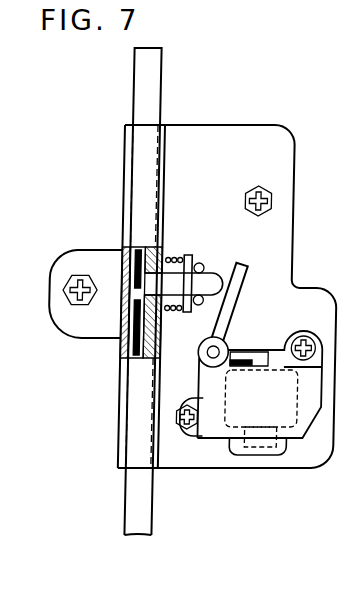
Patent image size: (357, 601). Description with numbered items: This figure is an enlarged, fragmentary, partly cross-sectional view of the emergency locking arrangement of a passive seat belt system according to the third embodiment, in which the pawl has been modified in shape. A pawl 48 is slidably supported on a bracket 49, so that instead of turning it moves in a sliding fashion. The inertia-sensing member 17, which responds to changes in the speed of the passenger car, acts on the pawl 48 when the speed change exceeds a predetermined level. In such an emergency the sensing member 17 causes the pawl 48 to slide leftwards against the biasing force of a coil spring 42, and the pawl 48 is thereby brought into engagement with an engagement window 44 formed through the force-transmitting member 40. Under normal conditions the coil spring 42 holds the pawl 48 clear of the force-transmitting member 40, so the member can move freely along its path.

The inertia-sensing member 17 is at (248, 405).
The force-transmitting member 40 is at (141, 352).
The coil spring 42 is at (181, 250).
The engagement window 44 is at (133, 282).
The pawl 48 is at (138, 248).
The bracket 49 is at (240, 123).